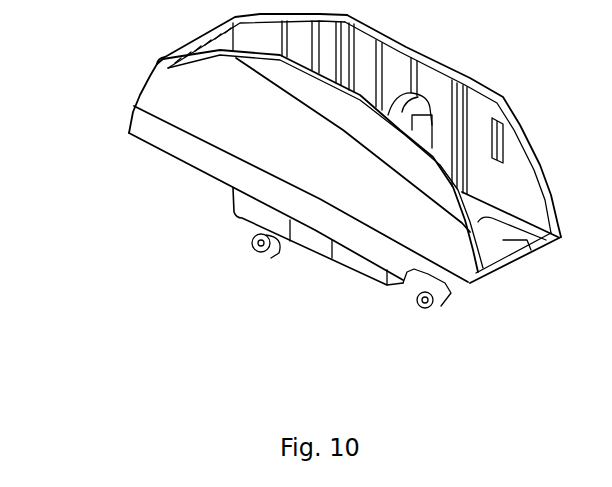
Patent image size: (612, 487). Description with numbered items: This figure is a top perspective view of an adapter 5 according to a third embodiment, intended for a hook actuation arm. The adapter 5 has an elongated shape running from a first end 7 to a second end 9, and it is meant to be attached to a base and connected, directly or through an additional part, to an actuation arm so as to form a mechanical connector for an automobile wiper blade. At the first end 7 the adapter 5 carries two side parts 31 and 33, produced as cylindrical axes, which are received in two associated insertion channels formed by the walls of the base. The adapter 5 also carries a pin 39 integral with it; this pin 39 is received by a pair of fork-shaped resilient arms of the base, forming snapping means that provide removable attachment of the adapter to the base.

The adapter 5 is at (120, 157).
The first end 7 is at (516, 80).
The second end 9 is at (124, 93).
The side part 31 is at (418, 307).
The side part 33 is at (531, 250).
The pin 39 is at (253, 248).